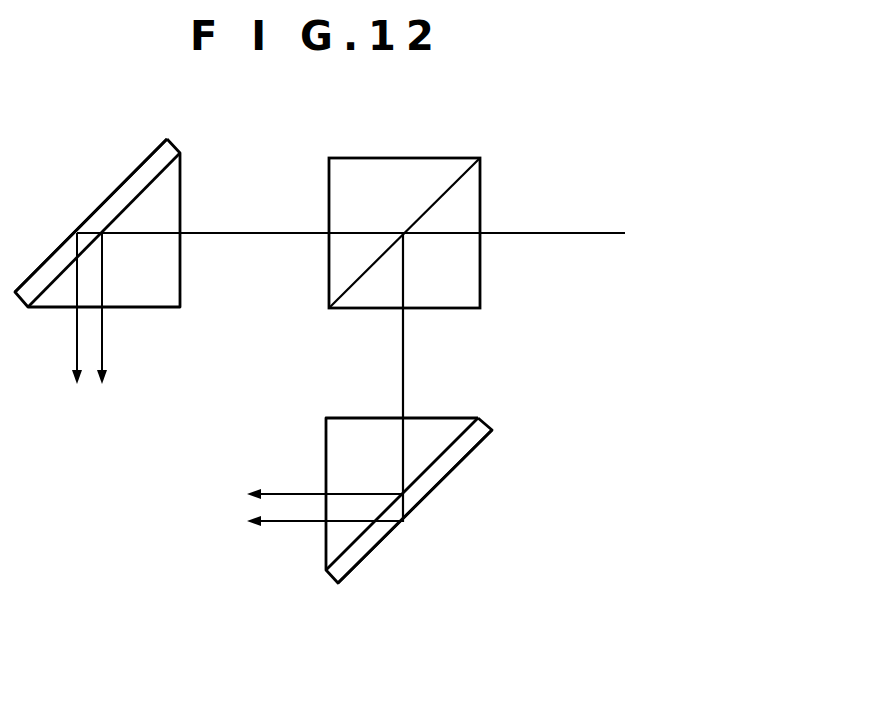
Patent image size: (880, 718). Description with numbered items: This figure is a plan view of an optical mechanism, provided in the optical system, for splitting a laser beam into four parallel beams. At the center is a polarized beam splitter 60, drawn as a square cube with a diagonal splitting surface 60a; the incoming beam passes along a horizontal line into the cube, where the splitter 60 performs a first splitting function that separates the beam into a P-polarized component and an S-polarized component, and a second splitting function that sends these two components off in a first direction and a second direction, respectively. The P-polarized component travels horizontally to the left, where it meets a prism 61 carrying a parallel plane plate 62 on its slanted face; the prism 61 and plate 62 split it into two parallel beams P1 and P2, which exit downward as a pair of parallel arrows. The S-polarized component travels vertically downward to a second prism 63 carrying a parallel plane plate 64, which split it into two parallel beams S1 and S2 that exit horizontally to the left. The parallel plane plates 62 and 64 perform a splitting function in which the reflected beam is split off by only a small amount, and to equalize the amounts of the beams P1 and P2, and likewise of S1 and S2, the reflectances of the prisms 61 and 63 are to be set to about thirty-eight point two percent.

The polarized beam splitter 60 is at (388, 168).
The polarization splitting surface 60a is at (460, 178).
The prism 61 is at (182, 190).
The parallel plane plate 62 is at (123, 187).
The prism 63 is at (452, 422).
The parallel plane plate 64 is at (348, 567).
The parallel beam P1 is at (74, 329).
The parallel beam P2 is at (112, 329).
The parallel beam S1 is at (305, 495).
The parallel beam S2 is at (305, 523).